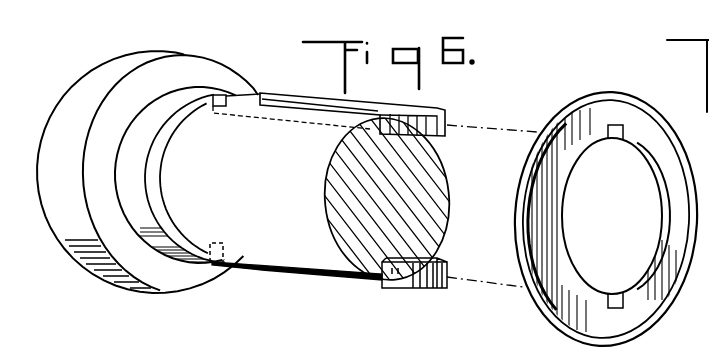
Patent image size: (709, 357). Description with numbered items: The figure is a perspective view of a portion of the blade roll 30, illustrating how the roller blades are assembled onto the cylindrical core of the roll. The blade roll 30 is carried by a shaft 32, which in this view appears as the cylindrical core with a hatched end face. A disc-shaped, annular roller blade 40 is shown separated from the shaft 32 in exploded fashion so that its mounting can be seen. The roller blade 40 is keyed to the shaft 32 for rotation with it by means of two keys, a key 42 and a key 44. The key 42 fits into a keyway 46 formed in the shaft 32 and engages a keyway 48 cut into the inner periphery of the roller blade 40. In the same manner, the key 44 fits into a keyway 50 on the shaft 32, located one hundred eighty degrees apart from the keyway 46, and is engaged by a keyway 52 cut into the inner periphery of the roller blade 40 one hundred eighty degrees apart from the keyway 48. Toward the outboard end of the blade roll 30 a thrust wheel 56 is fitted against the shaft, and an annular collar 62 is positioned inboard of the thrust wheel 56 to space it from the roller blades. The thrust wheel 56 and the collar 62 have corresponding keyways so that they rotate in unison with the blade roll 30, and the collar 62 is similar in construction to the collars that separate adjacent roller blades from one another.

The blade roll 30 is at (229, 296).
The shaft 32 is at (433, 213).
The roller blade 40 is at (562, 307).
The key 42 is at (443, 113).
The key 44 is at (412, 283).
The keyway 46 is at (213, 113).
The keyway 48 is at (620, 139).
The keyway 50 is at (224, 242).
The keyway 52 is at (615, 294).
The thrust wheel 56 is at (97, 272).
The annular collar 62 is at (168, 257).